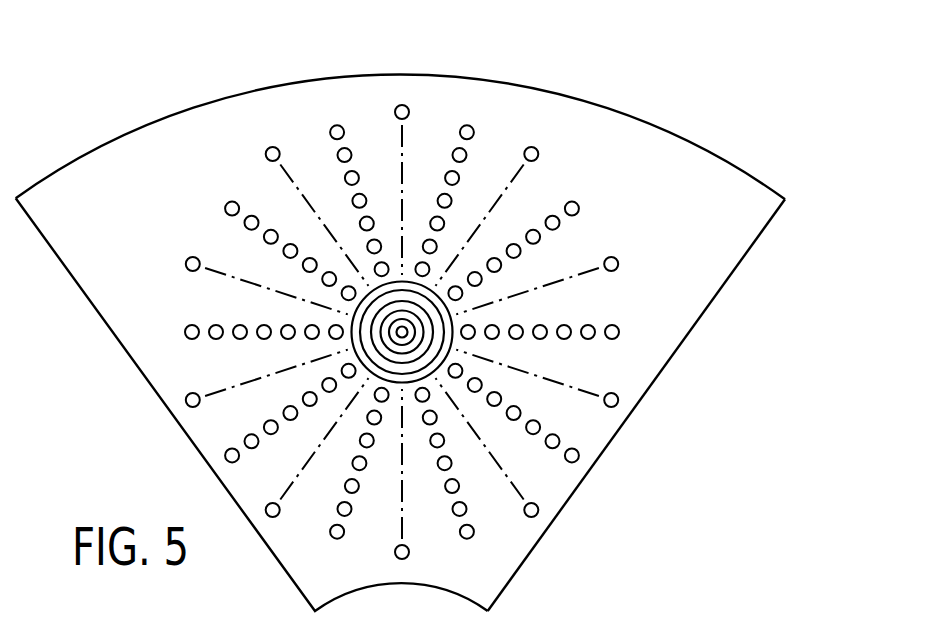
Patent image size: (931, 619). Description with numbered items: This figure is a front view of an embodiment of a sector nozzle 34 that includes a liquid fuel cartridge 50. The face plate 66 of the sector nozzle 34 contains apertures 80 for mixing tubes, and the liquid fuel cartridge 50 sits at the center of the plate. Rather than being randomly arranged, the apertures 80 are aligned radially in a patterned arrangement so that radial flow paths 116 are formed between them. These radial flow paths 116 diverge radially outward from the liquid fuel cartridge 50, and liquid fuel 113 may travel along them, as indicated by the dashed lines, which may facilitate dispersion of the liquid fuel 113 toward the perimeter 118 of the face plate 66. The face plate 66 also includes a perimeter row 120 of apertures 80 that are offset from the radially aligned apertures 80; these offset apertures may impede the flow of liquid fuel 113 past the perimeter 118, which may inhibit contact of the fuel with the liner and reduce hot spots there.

The sector nozzle 34 is at (405, 310).
The face plate 66 is at (717, 180).
The perimeter 118 is at (703, 320).
The liquid fuel cartridge 50 is at (425, 377).
The apertures 80 is at (503, 396).
The perimeter row 120 is at (177, 257).
The liquid fuel 113 is at (391, 314).
The radial flow paths 116 is at (585, 243).